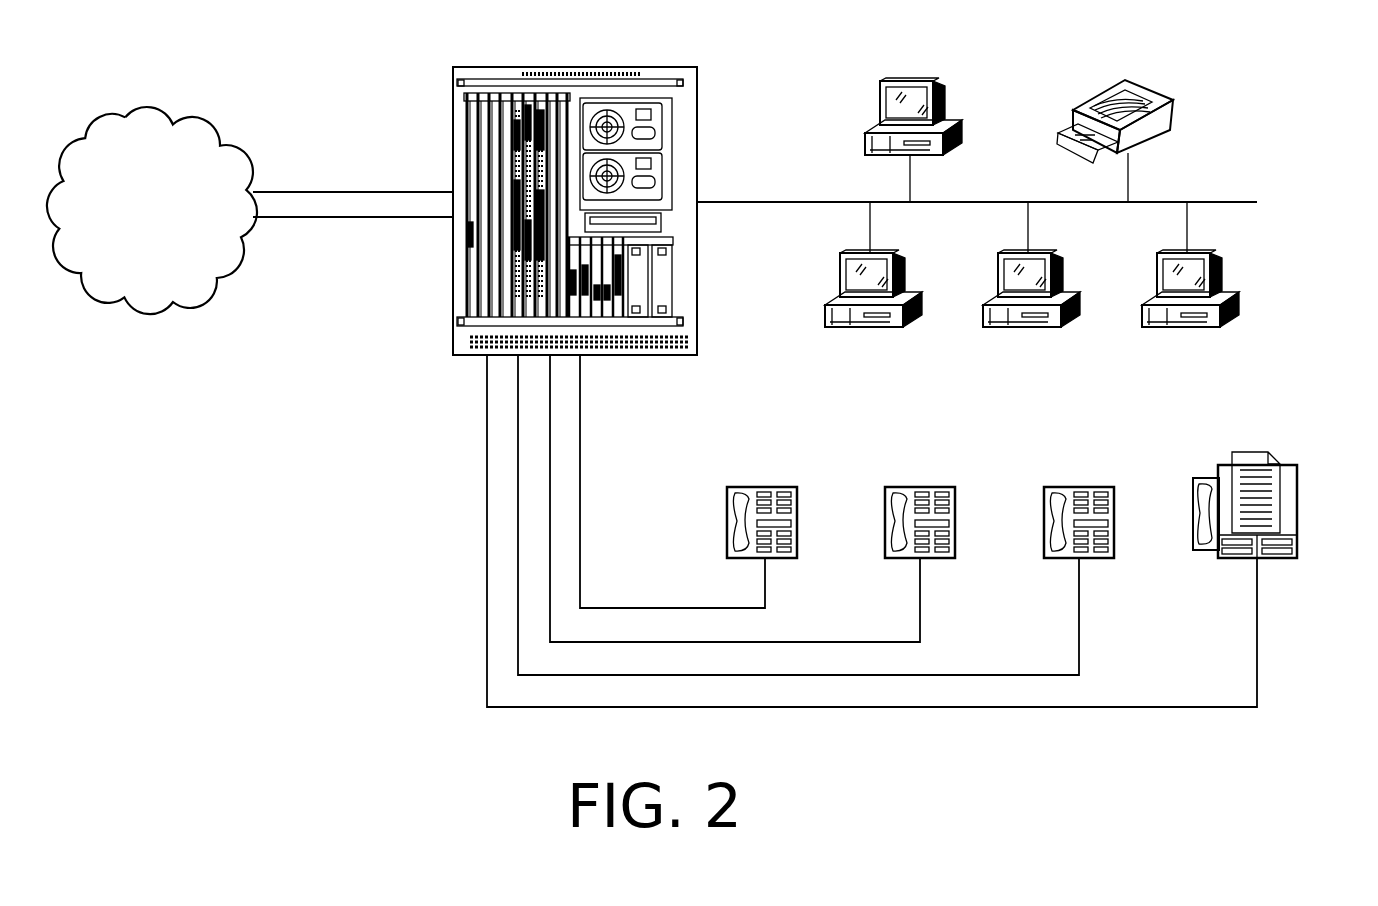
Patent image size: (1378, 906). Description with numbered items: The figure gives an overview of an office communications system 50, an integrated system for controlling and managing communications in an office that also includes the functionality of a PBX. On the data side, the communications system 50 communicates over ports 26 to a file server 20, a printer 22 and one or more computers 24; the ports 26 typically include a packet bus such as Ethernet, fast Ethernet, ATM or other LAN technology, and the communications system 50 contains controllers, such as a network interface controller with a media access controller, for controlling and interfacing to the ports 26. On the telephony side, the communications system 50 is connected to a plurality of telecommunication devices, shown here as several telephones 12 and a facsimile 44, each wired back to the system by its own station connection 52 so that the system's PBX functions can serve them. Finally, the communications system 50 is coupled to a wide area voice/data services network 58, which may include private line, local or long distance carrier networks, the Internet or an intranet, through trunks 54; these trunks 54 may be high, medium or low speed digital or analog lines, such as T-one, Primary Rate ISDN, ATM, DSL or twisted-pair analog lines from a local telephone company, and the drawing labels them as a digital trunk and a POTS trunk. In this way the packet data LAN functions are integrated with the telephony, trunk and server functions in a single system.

The telephones 12 is at (765, 487).
The file server 20 is at (958, 150).
The printer 22 is at (1160, 140).
The computers 24 is at (868, 328).
The ports 26 is at (733, 201).
The facsimile 44 is at (1300, 492).
The communications system 50 is at (681, 63).
The telephone station wiring 52 is at (631, 607).
The trunks 54 is at (269, 190).
The voice/data services network 58 is at (98, 302).